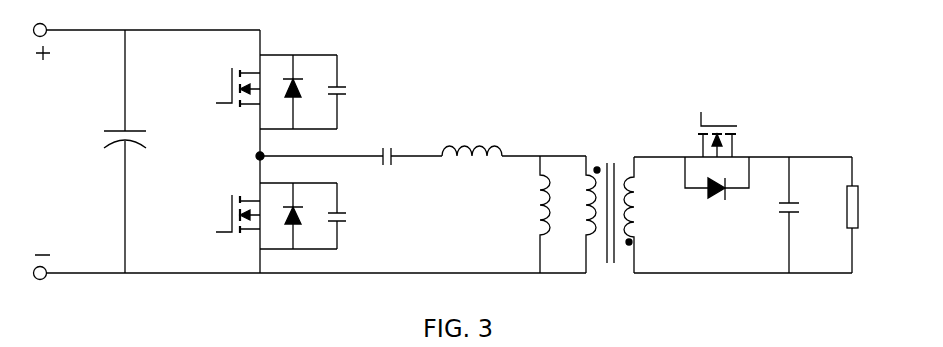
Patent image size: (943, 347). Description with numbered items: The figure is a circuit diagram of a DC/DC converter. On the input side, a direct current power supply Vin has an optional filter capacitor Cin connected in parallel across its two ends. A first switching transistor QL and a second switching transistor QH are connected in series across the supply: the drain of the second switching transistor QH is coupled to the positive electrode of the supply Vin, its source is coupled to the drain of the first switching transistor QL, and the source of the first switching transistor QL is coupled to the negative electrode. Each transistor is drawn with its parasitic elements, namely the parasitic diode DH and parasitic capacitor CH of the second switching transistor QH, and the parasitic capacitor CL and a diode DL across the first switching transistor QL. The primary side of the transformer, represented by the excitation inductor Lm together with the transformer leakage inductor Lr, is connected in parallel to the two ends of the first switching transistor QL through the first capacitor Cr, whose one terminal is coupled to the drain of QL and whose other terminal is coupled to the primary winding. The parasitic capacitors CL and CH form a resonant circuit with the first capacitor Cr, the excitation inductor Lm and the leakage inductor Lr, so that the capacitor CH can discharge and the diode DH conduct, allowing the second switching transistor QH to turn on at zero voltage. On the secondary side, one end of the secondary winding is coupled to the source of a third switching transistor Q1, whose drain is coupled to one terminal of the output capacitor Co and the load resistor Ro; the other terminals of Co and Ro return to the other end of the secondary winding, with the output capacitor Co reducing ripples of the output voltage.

The direct current power supply Vin is at (44, 152).
The filter capacitor Cin is at (150, 151).
The second switching transistor QH is at (223, 87).
The parasitic diode DH is at (298, 92).
The parasitic capacitor CH is at (356, 92).
The first switching transistor QL is at (223, 214).
The low-side body diode DL is at (298, 217).
The parasitic capacitor CL is at (353, 218).
The first capacitor Cr is at (386, 140).
The transformer leakage inductor Lr is at (472, 136).
The excitation inductor Lm is at (529, 214).
The third switching transistor Q1 is at (717, 145).
The output capacitor Co is at (807, 215).
The load resistor Ro is at (869, 215).